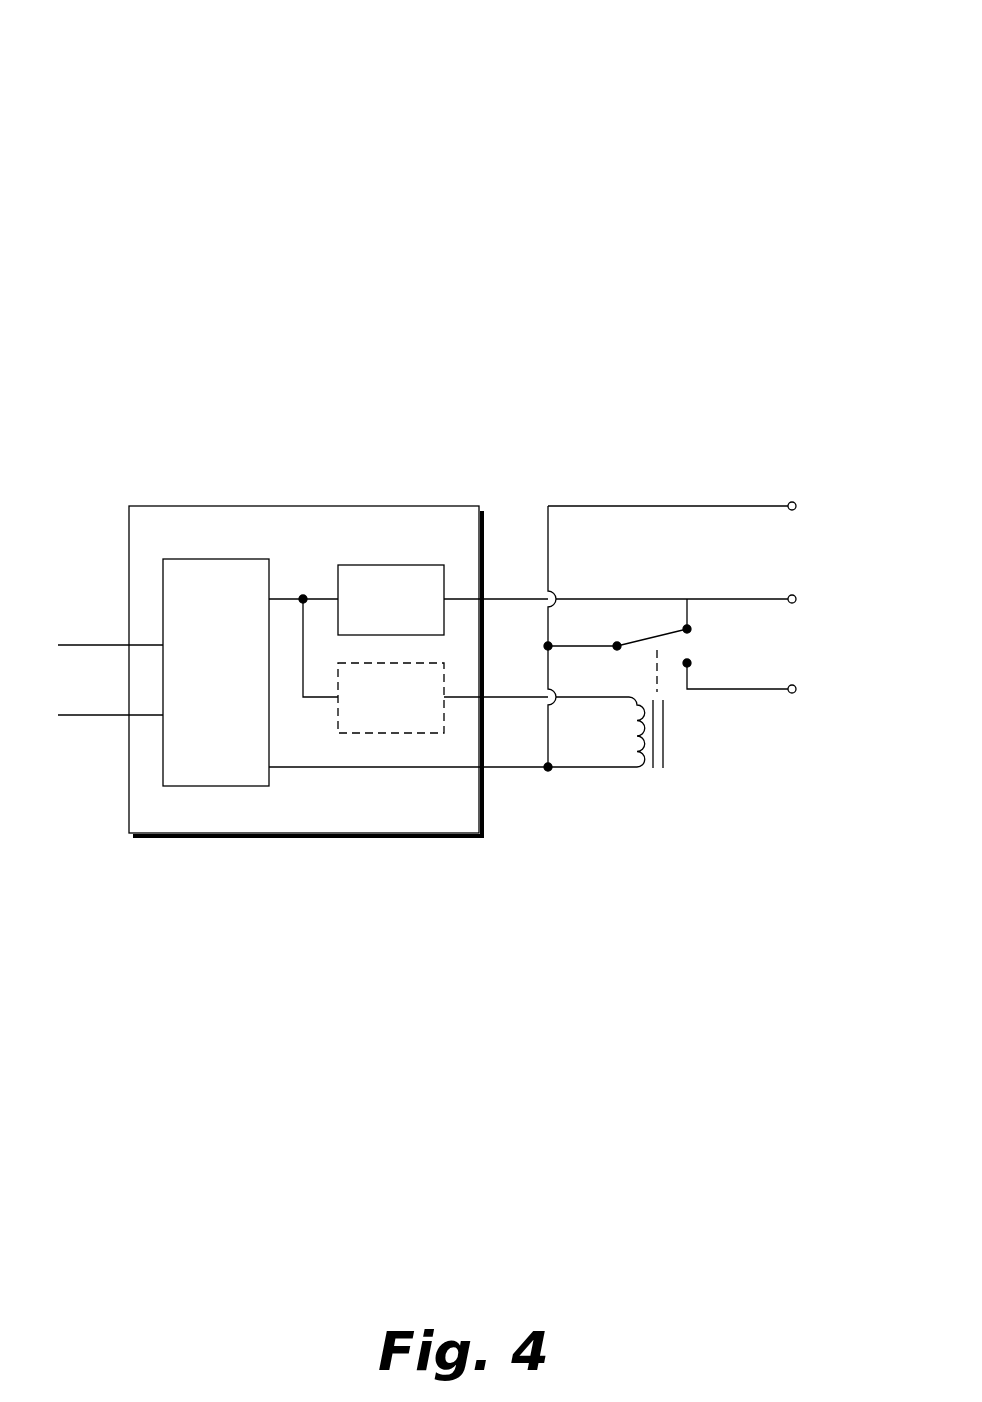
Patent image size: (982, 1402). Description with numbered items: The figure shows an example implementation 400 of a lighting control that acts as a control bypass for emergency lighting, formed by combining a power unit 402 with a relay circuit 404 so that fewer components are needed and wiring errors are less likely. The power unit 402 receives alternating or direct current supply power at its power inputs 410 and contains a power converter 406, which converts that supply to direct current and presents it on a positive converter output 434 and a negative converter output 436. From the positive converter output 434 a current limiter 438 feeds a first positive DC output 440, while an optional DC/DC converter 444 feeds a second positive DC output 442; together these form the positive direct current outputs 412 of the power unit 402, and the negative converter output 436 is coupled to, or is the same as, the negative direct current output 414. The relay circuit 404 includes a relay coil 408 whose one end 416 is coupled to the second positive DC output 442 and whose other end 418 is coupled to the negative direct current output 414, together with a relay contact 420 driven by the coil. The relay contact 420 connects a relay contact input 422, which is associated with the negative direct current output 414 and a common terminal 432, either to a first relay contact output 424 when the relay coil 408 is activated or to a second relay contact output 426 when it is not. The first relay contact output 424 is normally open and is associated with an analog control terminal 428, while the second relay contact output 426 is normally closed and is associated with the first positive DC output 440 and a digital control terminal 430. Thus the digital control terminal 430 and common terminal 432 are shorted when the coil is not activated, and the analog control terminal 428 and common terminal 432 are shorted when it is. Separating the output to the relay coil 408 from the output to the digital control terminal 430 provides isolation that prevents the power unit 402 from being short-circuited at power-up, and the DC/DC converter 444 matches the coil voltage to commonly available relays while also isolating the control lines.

The example implementation 400 is at (128, 82).
The power unit 402 is at (330, 506).
The relay circuit 404 is at (618, 432).
The power converter 406 is at (220, 559).
The relay coil 408 is at (652, 782).
The power inputs 410 is at (95, 645).
The positive direct current outputs 412 is at (555, 636).
The negative direct current output 414 is at (503, 773).
The one end of the relay coil 416 is at (620, 697).
The another end of the relay coil 418 is at (617, 768).
The relay contact 420 is at (663, 620).
The relay contact input 422 is at (573, 646).
The first relay contact output 424 is at (689, 663).
The second relay contact output 426 is at (690, 628).
The analog control terminal 428 is at (757, 690).
The digital control terminal 430 is at (757, 598).
The common terminal 432 is at (757, 506).
The positive converter output 434 is at (287, 598).
The negative converter output 436 is at (312, 768).
The current limiter 438 is at (390, 565).
The first positive DC output 440 is at (497, 598).
The second positive DC output 442 is at (503, 702).
The DC/DC converter 444 is at (393, 735).